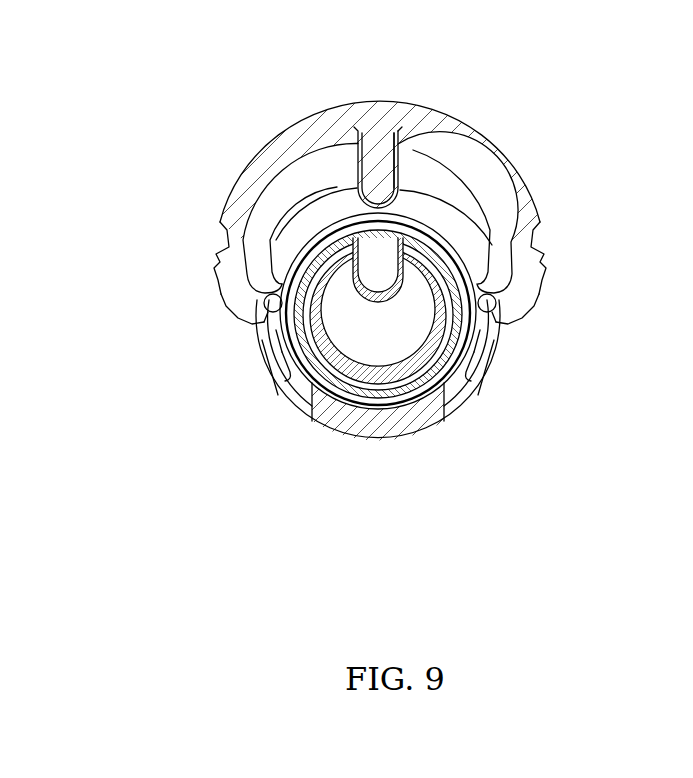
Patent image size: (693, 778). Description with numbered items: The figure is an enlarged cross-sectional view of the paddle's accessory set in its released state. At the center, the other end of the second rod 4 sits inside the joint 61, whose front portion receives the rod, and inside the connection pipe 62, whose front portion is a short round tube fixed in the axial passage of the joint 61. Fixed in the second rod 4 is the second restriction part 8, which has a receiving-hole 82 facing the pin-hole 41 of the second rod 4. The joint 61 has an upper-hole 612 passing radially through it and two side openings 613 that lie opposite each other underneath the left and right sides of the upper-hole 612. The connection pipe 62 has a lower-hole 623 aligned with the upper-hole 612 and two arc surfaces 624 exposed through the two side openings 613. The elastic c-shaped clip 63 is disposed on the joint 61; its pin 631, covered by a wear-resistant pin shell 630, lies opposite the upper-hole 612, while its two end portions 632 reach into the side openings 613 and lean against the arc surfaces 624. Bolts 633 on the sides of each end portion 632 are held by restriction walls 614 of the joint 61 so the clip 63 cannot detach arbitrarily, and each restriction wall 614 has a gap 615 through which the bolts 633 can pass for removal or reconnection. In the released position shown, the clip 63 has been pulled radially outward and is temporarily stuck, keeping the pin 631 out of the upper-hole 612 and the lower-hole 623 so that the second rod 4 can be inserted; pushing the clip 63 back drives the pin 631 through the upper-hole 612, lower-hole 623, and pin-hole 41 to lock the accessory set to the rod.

The second rod 4 is at (355, 383).
The second restriction part 8 is at (394, 380).
The pin-hole 41 is at (400, 224).
The joint 61 is at (378, 442).
The connection pipe 62 is at (300, 392).
The c-shaped clip 63 is at (378, 103).
The receiving-hole 82 is at (383, 263).
The upper-hole 612 is at (398, 210).
The side openings 613 is at (305, 385).
The restriction walls 614 is at (278, 350).
The gap 615 is at (292, 405).
The lower-hole 623 is at (372, 226).
The arc surfaces 624 is at (289, 366).
The pin shell 630 is at (356, 146).
The pin 631 is at (403, 140).
The end portions 632 is at (268, 345).
The bolts 633 is at (275, 285).